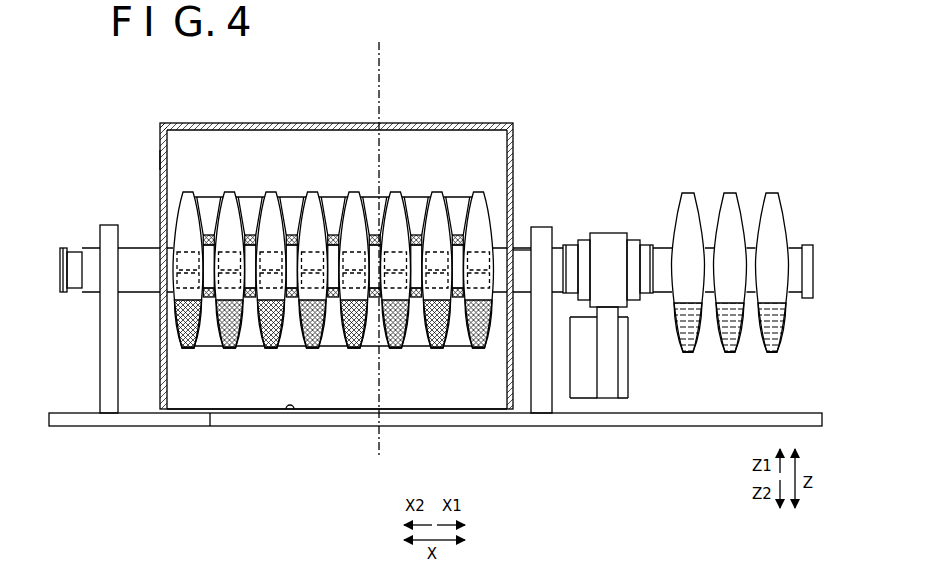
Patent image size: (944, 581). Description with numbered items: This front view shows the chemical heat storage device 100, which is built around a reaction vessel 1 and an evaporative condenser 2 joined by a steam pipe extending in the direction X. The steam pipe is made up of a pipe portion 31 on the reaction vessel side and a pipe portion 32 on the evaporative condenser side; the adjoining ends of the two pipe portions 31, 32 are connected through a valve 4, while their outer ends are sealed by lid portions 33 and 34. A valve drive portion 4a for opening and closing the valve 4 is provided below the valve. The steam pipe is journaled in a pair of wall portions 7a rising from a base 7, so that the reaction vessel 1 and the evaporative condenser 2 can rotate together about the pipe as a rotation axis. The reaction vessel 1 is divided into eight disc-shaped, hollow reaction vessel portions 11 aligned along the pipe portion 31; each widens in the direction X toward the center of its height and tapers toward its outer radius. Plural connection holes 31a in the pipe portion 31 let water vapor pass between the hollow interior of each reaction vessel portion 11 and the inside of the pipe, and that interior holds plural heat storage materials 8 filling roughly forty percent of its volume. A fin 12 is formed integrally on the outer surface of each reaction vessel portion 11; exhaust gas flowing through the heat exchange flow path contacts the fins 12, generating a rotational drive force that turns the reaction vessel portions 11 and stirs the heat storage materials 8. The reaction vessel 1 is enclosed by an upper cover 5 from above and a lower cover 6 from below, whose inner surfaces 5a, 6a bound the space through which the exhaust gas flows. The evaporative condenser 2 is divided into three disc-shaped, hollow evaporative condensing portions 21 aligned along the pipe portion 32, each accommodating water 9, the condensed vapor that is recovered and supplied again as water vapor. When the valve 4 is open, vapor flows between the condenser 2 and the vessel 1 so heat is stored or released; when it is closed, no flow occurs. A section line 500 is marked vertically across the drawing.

The chemical heat storage device 100 is at (660, 77).
The reaction vessel 1 is at (309, 242).
The evaporative condenser 2 is at (747, 249).
The pipe portion 31 is at (138, 253).
The connection hole 31a is at (518, 190).
The pipe portion 32 is at (801, 245).
The lid portion 33 is at (63, 248).
The lid portion 34 is at (805, 300).
The valve 4 is at (608, 232).
The valve drive portion 4a is at (628, 355).
The upper cover 5 is at (499, 125).
The inner surface 5a is at (162, 160).
The lower cover 6 is at (212, 413).
The inner surface 6a is at (290, 411).
The base 7 is at (436, 427).
The wall portion 7a is at (111, 224).
The heat storage material 8 is at (188, 350).
The water 9 is at (688, 354).
The reaction vessel portion 11 is at (188, 190).
The fin 12 is at (209, 197).
The evaporative condensing portion 21 is at (688, 192).
The section line 500 is at (382, 52).